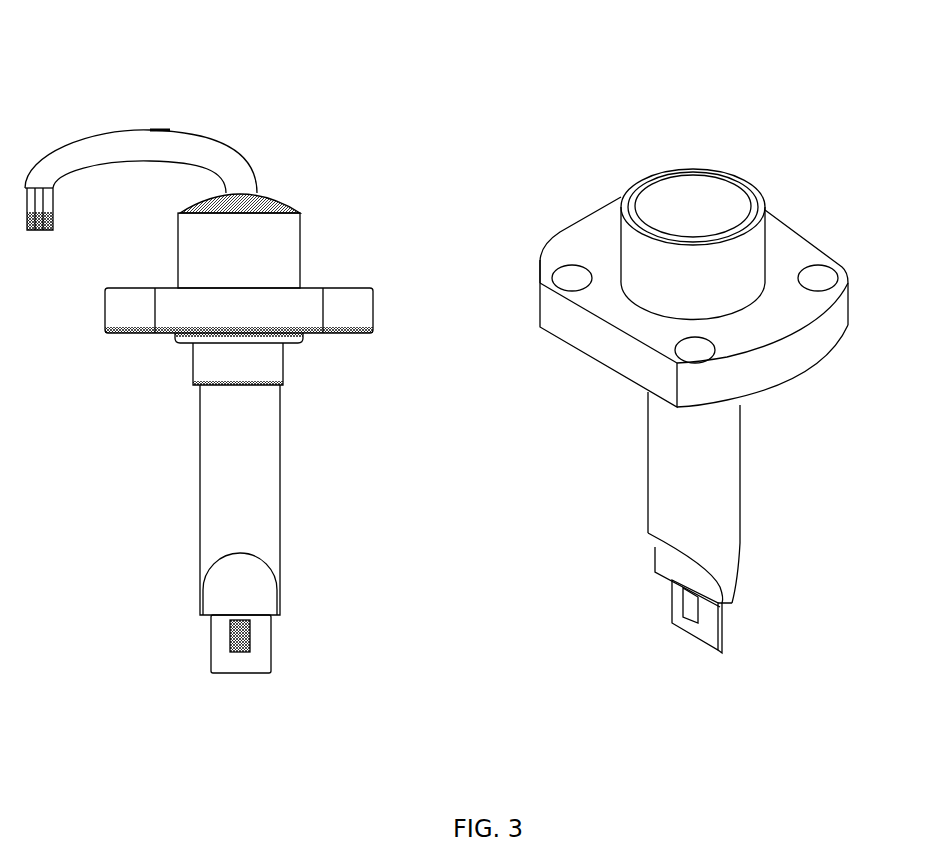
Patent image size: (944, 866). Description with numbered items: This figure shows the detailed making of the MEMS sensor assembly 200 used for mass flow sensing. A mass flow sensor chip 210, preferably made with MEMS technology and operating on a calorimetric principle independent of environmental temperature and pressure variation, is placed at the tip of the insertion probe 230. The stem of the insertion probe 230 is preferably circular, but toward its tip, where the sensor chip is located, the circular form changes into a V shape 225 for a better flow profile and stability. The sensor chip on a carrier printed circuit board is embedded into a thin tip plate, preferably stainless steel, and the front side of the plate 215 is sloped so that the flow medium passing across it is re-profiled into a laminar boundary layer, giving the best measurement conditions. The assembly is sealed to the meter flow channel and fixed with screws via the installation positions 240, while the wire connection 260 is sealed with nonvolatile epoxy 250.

The MEMS sensor assembly 200 is at (283, 310).
The mass flow sensor chip 210 is at (232, 635).
The front side of the plate 215 is at (268, 663).
The V shape 225 is at (675, 565).
The insertion probe 230 is at (231, 481).
The installation positions 240 is at (825, 273).
The nonvolatile epoxy 250 is at (263, 203).
The wire connection 260 is at (204, 151).